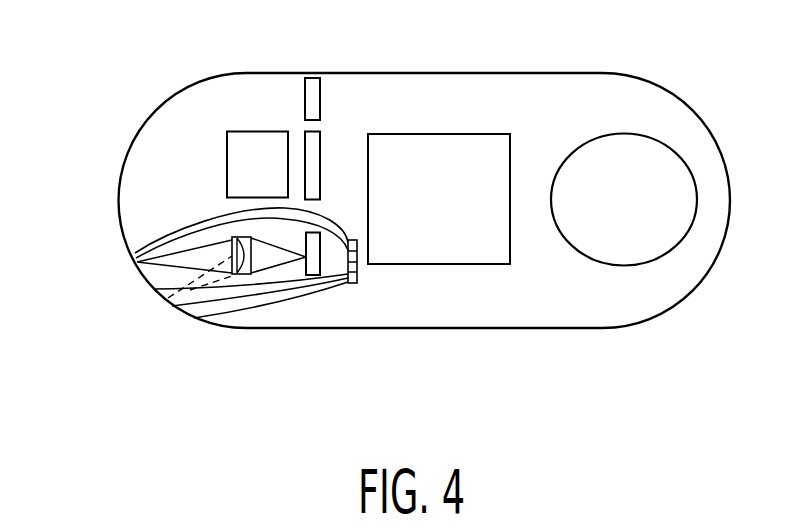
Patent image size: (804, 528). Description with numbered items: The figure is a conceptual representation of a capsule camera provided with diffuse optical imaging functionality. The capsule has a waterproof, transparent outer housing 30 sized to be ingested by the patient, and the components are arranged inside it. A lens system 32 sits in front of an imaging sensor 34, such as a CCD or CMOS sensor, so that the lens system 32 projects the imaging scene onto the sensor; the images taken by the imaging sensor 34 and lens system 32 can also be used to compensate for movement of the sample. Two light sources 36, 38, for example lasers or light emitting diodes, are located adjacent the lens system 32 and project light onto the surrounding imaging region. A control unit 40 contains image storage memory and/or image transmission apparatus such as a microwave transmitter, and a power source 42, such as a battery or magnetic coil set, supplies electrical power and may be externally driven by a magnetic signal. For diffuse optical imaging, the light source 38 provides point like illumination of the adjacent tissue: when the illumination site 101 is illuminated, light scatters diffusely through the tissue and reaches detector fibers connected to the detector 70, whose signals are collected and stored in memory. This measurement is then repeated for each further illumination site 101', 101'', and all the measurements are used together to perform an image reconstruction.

The outer housing 30 is at (547, 328).
The lens system 32 is at (227, 144).
The imaging sensor 34 is at (320, 167).
The light source 36 is at (305, 98).
The light source 38 is at (320, 258).
The control unit 40 is at (487, 265).
The power source 42 is at (633, 266).
The detector 70 is at (357, 284).
The illumination site 101 is at (186, 269).
The illumination site 101' is at (206, 324).
The illumination site 101'' is at (249, 359).